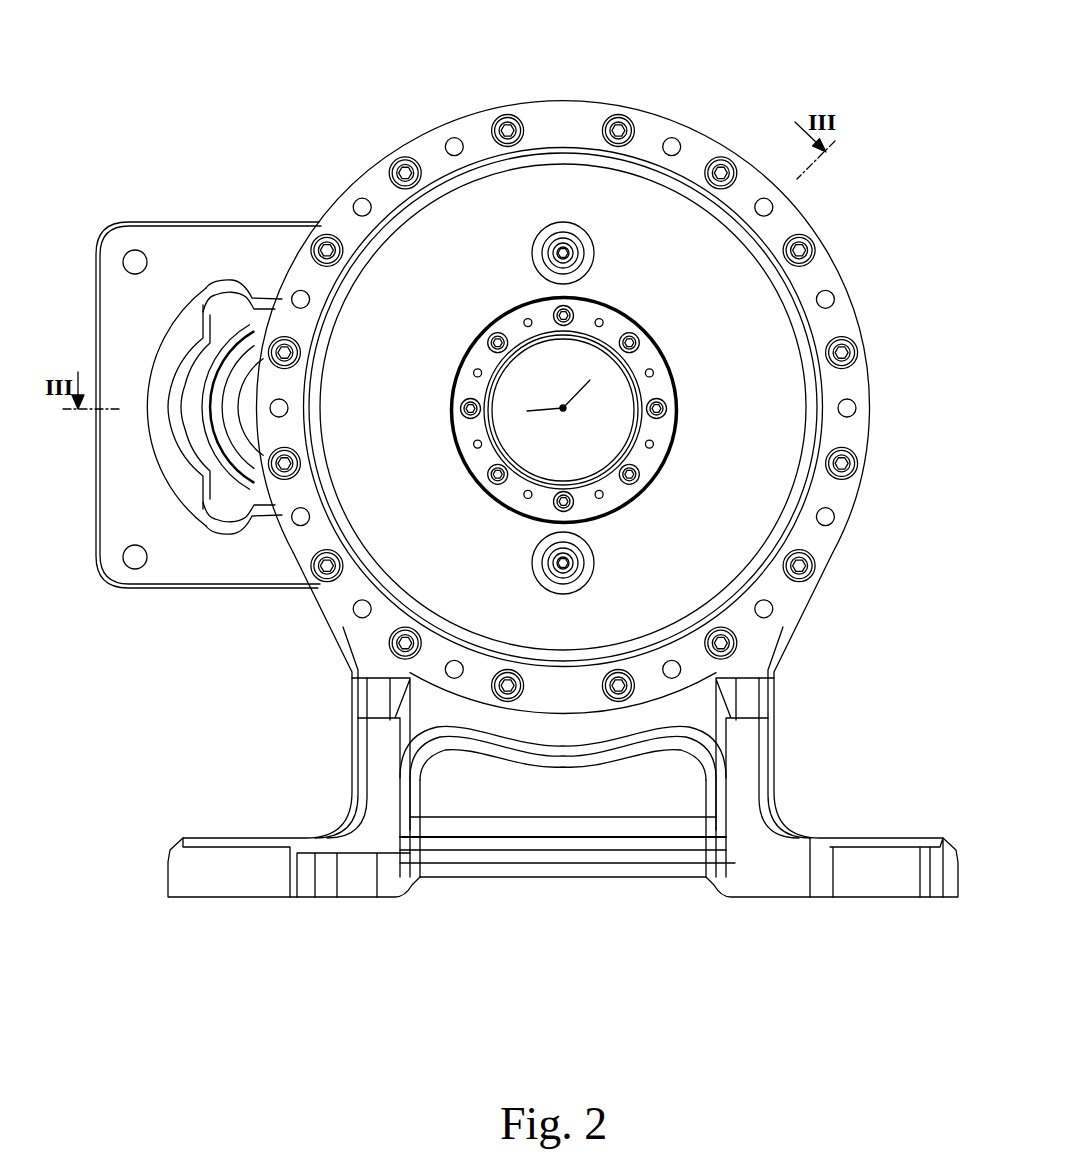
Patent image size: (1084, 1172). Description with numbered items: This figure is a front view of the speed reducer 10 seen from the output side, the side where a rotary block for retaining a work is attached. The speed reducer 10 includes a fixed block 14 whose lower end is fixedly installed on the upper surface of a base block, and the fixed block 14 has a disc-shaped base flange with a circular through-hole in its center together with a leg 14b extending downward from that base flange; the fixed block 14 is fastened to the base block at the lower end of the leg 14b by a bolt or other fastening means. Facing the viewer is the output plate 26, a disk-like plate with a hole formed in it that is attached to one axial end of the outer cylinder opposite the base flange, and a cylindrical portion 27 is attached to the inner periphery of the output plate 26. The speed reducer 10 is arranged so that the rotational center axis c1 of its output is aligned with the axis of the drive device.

The speed reducer 10 is at (672, 98).
The output plate 26 is at (765, 368).
The cylindrical portion 27 is at (673, 427).
The fixed block 14 is at (563, 783).
The leg 14b is at (770, 868).
The rotational center axis c1 is at (566, 411).